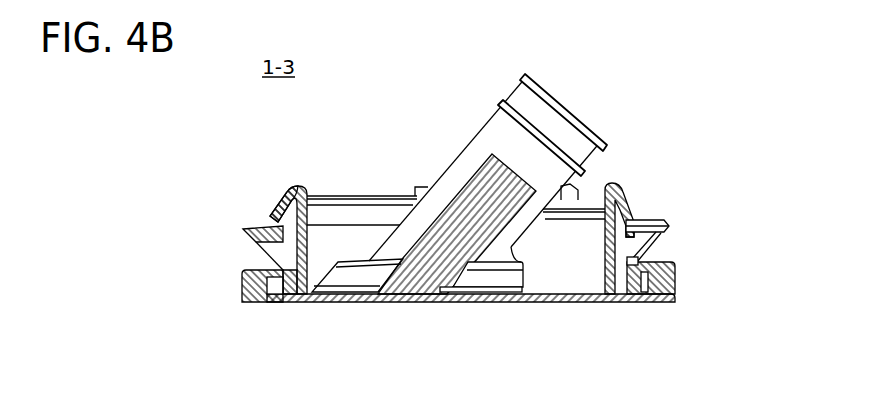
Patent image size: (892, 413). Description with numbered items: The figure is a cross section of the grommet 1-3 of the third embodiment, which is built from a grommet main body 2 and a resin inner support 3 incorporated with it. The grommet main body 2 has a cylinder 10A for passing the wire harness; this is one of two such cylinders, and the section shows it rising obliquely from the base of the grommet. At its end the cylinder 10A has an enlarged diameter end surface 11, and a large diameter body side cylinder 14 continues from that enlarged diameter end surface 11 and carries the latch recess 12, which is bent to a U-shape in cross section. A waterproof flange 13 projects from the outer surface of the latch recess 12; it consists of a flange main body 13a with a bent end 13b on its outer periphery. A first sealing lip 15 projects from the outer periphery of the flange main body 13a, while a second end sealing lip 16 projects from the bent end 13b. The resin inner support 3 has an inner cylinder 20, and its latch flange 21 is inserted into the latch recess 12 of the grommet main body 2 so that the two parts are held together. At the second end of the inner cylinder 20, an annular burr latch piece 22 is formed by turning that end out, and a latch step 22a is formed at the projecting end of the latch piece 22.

The grommet main body 2 is at (484, 260).
The resin inner support 3 is at (289, 186).
The cylinder 10A is at (480, 132).
The enlarged diameter end surface 11 is at (612, 301).
The latch recess 12 is at (676, 272).
The waterproof flange 13 is at (704, 227).
The flange main body 13a is at (657, 250).
The bent end 13b is at (667, 226).
The large diameter body side cylinder 14 is at (240, 290).
The first sealing lip 15 is at (645, 224).
The second end sealing lip 16 is at (663, 222).
The inner cylinder 20 is at (308, 232).
The latch flange 21 is at (280, 299).
The latch piece 22 is at (273, 216).
The latch step 22a is at (254, 220).